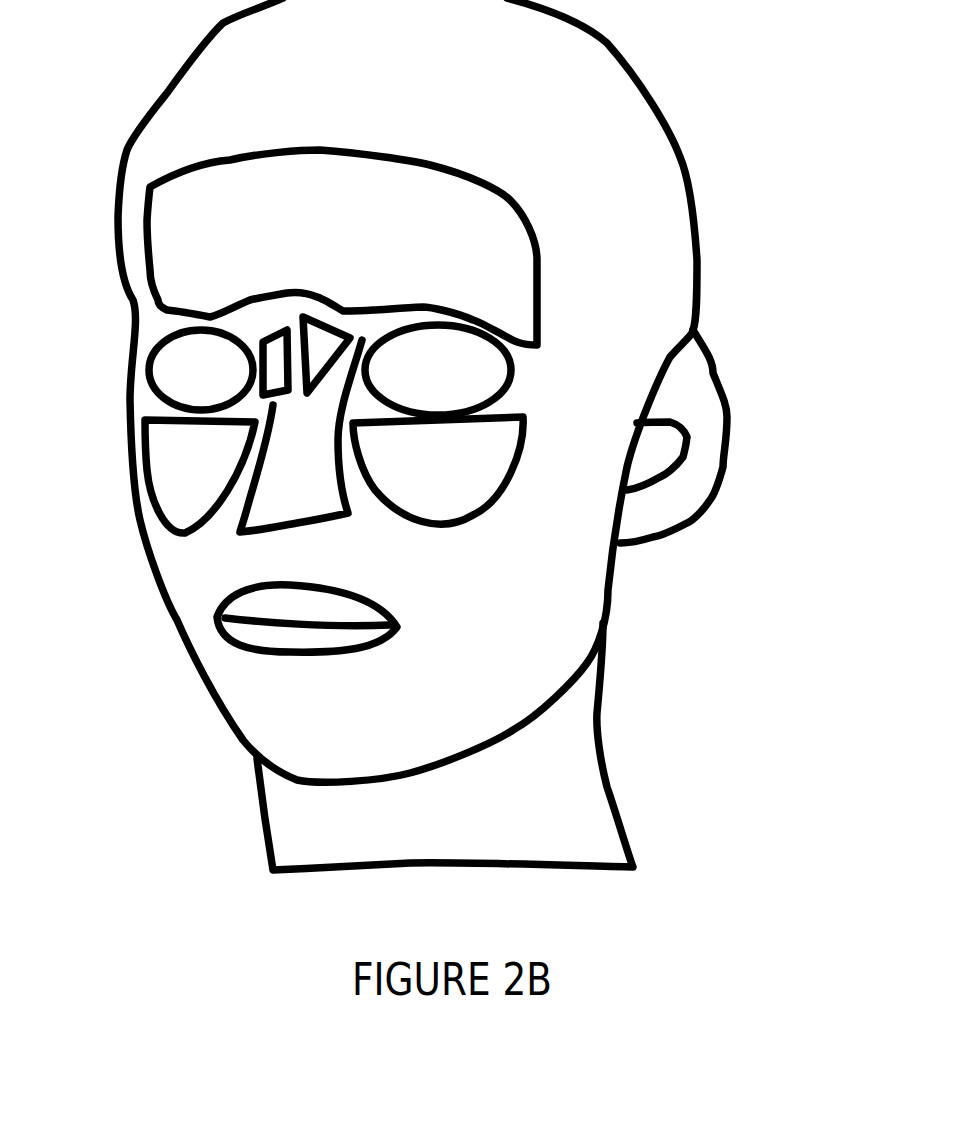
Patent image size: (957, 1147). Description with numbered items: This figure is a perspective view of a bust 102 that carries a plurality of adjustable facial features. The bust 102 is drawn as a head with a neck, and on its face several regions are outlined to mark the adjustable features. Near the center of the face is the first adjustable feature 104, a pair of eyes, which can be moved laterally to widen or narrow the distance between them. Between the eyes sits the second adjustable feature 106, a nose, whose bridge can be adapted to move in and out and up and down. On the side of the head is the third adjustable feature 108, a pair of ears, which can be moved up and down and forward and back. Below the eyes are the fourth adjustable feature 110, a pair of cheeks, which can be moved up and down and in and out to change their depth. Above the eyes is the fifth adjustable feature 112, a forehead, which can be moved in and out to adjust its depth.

The bust 102 is at (130, 98).
The first adjustable feature 104 is at (217, 386).
The second adjustable feature 106 is at (270, 350).
The third adjustable feature 108 is at (710, 440).
The fourth adjustable feature 110 is at (207, 492).
The fifth adjustable feature 112 is at (322, 222).